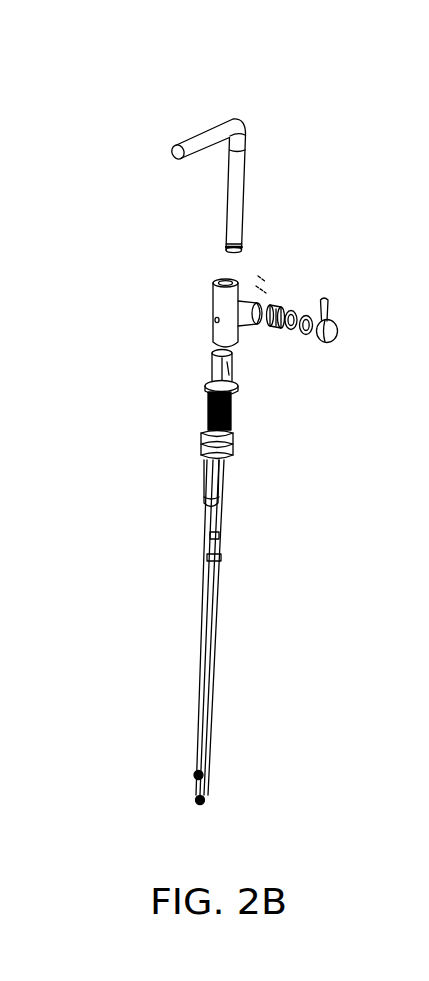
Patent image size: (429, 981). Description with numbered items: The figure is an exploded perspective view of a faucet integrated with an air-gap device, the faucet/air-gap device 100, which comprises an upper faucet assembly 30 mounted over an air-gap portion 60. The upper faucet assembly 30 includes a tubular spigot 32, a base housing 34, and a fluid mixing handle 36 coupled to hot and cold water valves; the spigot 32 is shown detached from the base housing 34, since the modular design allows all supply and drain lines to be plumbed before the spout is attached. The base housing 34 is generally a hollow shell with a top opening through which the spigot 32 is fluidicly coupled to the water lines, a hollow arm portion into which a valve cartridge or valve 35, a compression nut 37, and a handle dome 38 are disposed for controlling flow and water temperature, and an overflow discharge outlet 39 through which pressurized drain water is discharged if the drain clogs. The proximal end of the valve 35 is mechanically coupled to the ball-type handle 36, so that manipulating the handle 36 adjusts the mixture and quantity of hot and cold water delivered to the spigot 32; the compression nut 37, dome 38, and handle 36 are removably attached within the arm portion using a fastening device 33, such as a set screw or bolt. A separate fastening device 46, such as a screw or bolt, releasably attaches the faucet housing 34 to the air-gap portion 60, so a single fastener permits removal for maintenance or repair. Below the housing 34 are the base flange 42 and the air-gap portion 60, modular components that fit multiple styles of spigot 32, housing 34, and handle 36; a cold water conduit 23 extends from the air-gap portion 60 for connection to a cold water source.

The faucet/air-gap device 100 is at (290, 97).
The upper faucet assembly 30 is at (118, 145).
The tubular spigot 32 is at (238, 178).
The fastening device 46 is at (262, 278).
The fastening device 33 is at (262, 290).
The base housing 34 is at (214, 298).
The overflow discharge outlet 39 is at (214, 322).
The valve cartridge 35 is at (283, 312).
The compression nut 37 is at (294, 312).
The handle dome 38 is at (313, 318).
The fluid mixing handle 36 is at (338, 333).
The base flange 42 is at (205, 384).
The air-gap portion 60 is at (238, 384).
The cold water conduit 23 is at (208, 587).